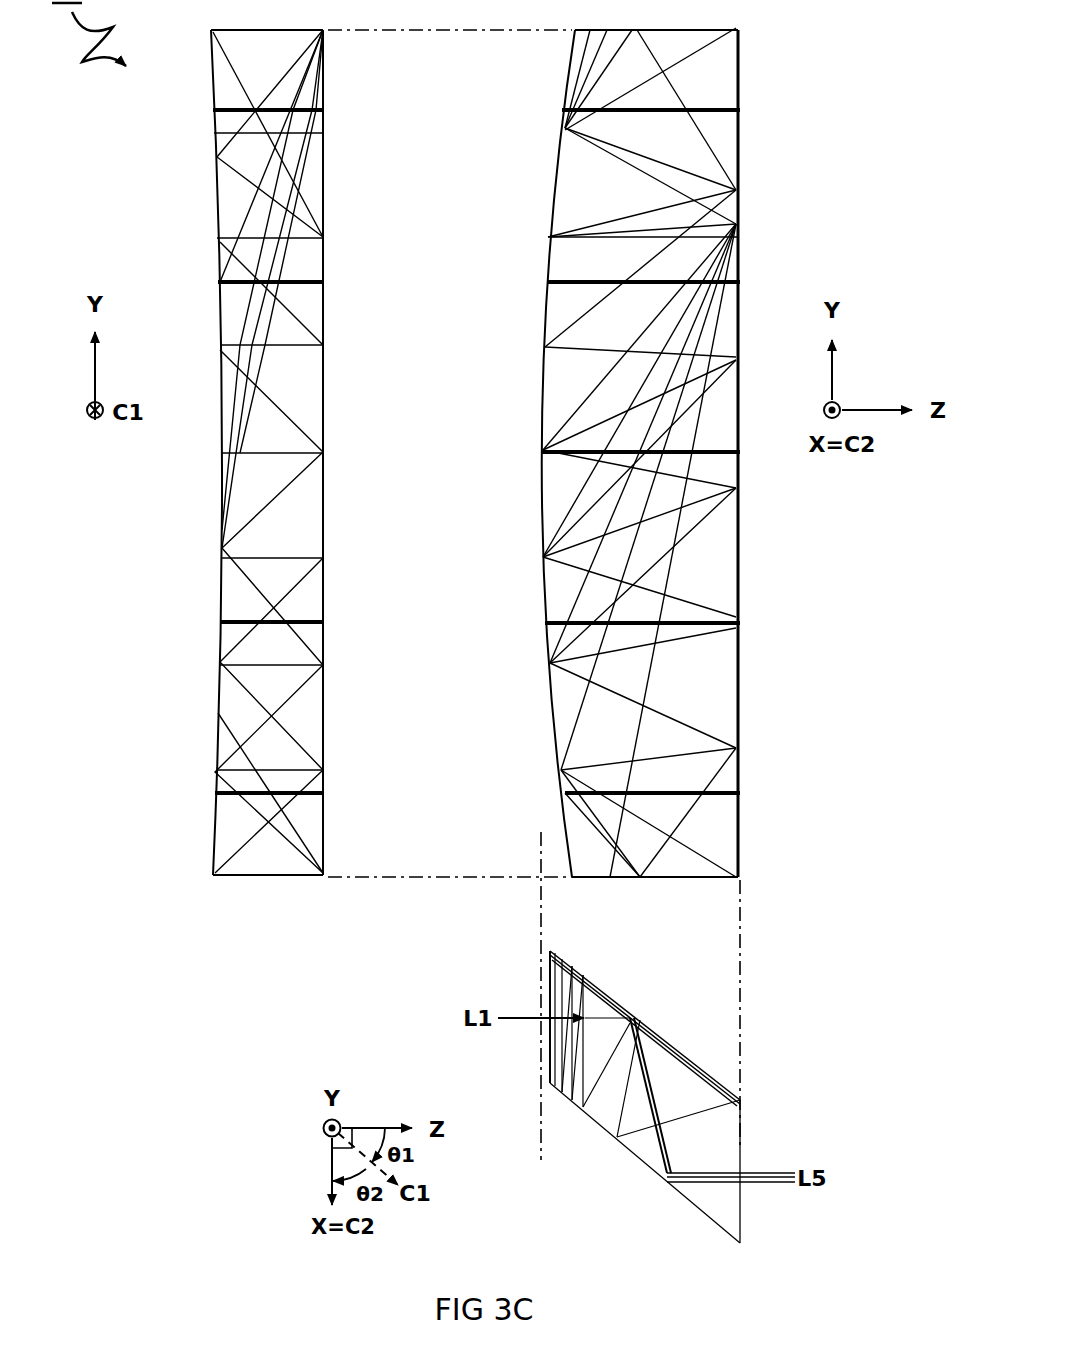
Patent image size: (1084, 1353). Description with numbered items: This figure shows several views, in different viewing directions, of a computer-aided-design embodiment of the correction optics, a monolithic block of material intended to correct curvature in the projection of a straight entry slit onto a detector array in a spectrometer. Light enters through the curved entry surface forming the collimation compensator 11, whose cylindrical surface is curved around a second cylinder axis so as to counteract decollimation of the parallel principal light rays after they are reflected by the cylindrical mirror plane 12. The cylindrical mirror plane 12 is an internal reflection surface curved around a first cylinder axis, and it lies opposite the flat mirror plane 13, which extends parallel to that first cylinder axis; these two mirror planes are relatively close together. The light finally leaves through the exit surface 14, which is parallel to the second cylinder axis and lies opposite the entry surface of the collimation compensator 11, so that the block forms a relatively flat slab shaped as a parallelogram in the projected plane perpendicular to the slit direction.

The collimation compensator 11 is at (538, 591).
The cylindrical mirror plane 12 is at (211, 510).
The flat mirror plane 13 is at (334, 511).
The exit surface 14 is at (749, 572).